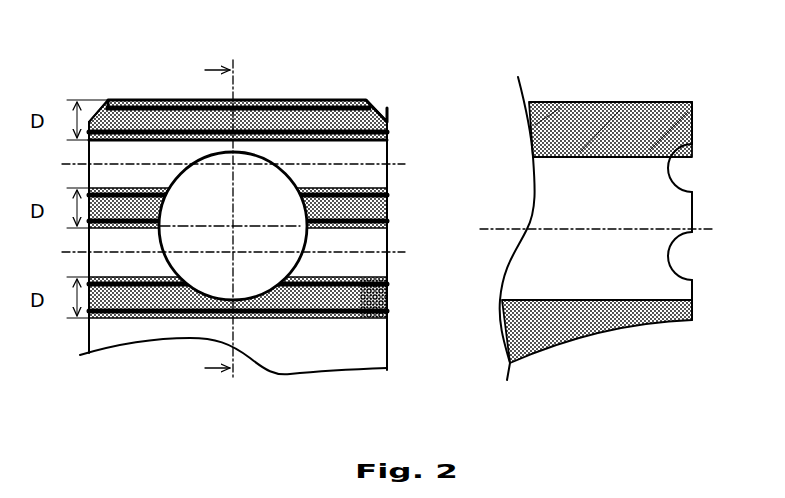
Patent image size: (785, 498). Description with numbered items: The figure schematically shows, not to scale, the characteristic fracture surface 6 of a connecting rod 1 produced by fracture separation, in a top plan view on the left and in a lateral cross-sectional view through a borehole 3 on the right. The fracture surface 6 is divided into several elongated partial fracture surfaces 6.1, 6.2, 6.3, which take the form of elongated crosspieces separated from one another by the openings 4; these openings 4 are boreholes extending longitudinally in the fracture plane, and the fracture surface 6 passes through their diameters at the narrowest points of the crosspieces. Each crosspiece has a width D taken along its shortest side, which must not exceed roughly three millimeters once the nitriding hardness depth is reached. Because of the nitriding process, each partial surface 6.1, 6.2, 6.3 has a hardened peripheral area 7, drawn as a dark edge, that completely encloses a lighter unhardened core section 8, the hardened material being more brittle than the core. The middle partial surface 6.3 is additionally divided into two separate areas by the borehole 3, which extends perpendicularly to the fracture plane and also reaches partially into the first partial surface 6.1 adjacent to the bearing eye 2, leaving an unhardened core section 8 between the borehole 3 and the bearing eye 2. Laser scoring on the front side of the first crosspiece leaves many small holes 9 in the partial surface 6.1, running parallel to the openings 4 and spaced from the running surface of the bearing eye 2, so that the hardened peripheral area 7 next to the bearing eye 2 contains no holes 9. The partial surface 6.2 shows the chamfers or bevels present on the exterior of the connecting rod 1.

The connecting rod 1 is at (185, 78).
The bearing eye 2 is at (110, 329).
The borehole 3 is at (206, 208).
The opening 4 is at (110, 150).
The fracture surface 6 is at (692, 308).
The first partial fracture surface 6.1 is at (387, 308).
The partial fracture surface 6.2 is at (387, 122).
The middle partial fracture surface 6.3 is at (387, 205).
The hardened peripheral area 7 is at (298, 100).
The unhardened core section 8 is at (341, 100).
The holes 9 is at (390, 290).